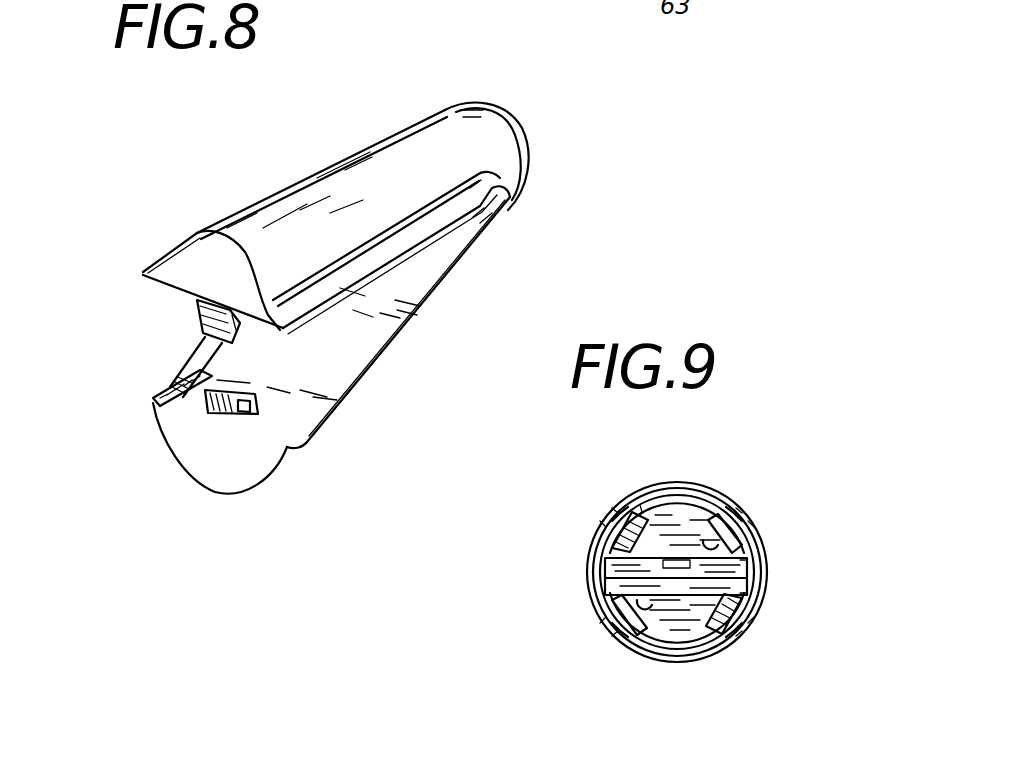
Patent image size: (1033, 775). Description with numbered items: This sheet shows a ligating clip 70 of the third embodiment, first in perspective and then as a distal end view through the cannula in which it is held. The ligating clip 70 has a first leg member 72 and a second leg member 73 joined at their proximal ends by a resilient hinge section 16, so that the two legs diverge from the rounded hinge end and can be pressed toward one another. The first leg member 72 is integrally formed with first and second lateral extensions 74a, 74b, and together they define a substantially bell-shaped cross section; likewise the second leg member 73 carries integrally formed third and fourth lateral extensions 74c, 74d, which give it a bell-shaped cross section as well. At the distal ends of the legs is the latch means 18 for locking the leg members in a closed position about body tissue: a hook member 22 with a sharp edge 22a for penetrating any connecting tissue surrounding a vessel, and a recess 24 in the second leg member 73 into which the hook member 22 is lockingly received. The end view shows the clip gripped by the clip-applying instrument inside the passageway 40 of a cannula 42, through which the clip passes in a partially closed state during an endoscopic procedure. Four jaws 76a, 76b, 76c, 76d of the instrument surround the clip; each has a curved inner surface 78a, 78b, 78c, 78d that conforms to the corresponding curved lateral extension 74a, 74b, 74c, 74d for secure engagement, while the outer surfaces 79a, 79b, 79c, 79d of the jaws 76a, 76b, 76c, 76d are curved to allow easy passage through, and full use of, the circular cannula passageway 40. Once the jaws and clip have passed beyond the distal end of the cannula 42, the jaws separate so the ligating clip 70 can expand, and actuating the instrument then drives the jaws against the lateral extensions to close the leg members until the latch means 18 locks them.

In FIG. 8, the resilient hinge section 16 is at (507, 138).
In FIG. 8, the latch means 18 is at (197, 417).
In FIG. 8, the hook member 22 is at (207, 313).
In FIG. 8, the sharp edge 22a is at (203, 337).
In FIG. 8, the recess 24 is at (240, 408).
In FIG. 9, the passageway 40 is at (593, 578).
In FIG. 9, the cannula 42 is at (588, 558).
In FIG. 8, the ligating clip 70 is at (434, 95).
In FIG. 9, the ligating clip 70 is at (668, 505).
In FIG. 8, the first leg member 72 is at (387, 165).
In FIG. 9, the first leg member 72 is at (687, 505).
In FIG. 8, the second leg member 73 is at (393, 288).
In FIG. 9, the second leg member 73 is at (690, 617).
In FIG. 8, the first lateral extension 74a is at (165, 262).
In FIG. 9, the first lateral extension 74a is at (607, 548).
In FIG. 8, the second lateral extension 74b is at (347, 273).
In FIG. 9, the second lateral extension 74b is at (747, 565).
In FIG. 8, the third lateral extension 74c is at (163, 387).
In FIG. 9, the third lateral extension 74c is at (657, 623).
In FIG. 8, the fourth lateral extension 74d is at (327, 415).
In FIG. 9, the fourth lateral extension 74d is at (758, 582).
In FIG. 9, the jaw 76a is at (610, 517).
In FIG. 9, the jaw 76b is at (737, 518).
In FIG. 9, the jaw 76c is at (610, 630).
In FIG. 9, the jaw 76d is at (750, 627).
In FIG. 9, the curved inner surface 78a is at (632, 512).
In FIG. 9, the curved inner surface 78b is at (740, 547).
In FIG. 9, the curved inner surface 78c is at (623, 600).
In FIG. 9, the curved inner surface 78d is at (747, 590).
In FIG. 9, the outer surface 79a is at (603, 527).
In FIG. 9, the outer surface 79b is at (715, 498).
In FIG. 9, the outer surface 79c is at (623, 637).
In FIG. 9, the outer surface 79d is at (727, 650).